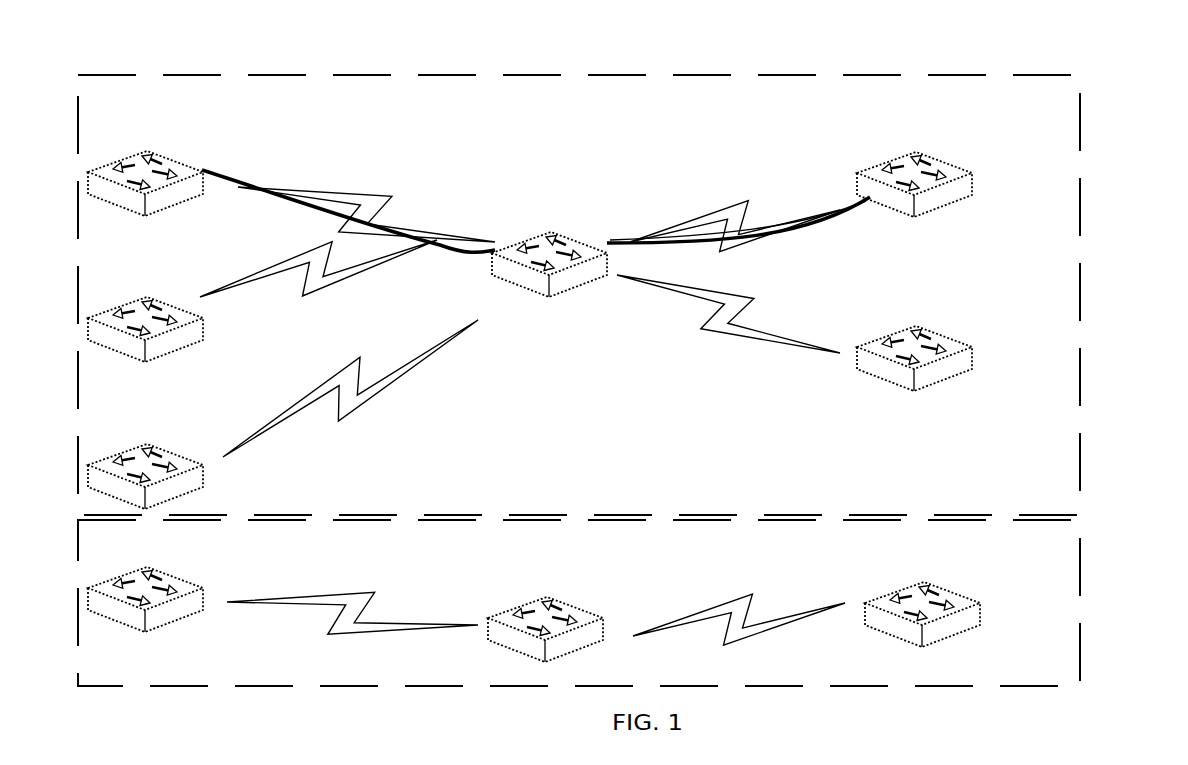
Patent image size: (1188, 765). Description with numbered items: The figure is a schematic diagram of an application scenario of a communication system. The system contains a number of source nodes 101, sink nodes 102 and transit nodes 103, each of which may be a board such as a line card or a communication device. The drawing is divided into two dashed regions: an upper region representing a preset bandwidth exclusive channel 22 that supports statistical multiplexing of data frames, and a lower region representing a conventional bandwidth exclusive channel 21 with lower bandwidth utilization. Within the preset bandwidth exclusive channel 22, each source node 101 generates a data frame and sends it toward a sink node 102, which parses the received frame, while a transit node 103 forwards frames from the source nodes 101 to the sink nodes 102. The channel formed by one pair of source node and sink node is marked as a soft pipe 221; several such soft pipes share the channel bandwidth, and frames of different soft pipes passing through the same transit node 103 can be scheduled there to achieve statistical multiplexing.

The source node 101 is at (170, 157).
The sink node 102 is at (950, 162).
The transit node 103 is at (546, 297).
The soft pipe 221 is at (604, 242).
The preset bandwidth exclusive channel 22 is at (1082, 103).
The conventional bandwidth exclusive channel 21 is at (1077, 587).